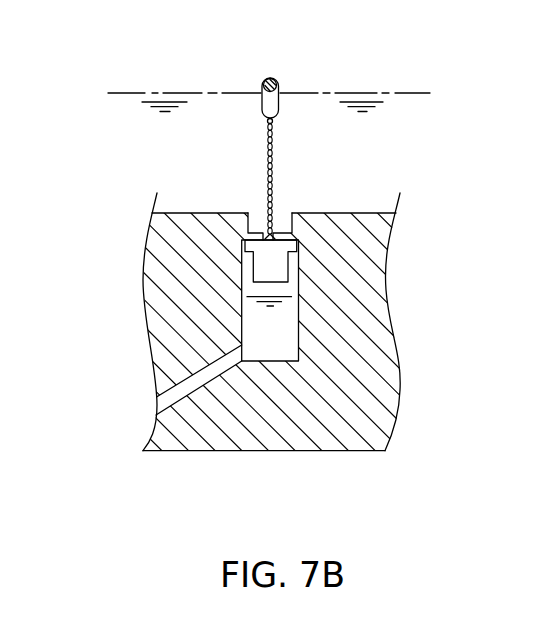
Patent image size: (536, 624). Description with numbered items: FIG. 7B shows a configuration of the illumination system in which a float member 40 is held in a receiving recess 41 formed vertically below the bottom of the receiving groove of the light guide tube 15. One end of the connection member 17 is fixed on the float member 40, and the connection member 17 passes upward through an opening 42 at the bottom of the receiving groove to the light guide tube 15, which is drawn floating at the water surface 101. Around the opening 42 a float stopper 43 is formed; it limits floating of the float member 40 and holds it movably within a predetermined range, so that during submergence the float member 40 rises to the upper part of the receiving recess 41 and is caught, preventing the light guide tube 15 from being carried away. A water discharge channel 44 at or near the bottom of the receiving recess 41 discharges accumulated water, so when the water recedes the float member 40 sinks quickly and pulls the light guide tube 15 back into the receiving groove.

The light guide tube 15 is at (268, 77).
The liquid surface 101 is at (415, 92).
The connection member 17 is at (272, 135).
The float stopper 43 is at (253, 232).
The opening 42 is at (277, 229).
The float member 40 is at (270, 268).
The receiving recess 41 is at (274, 349).
The water discharge channel 44 is at (202, 378).